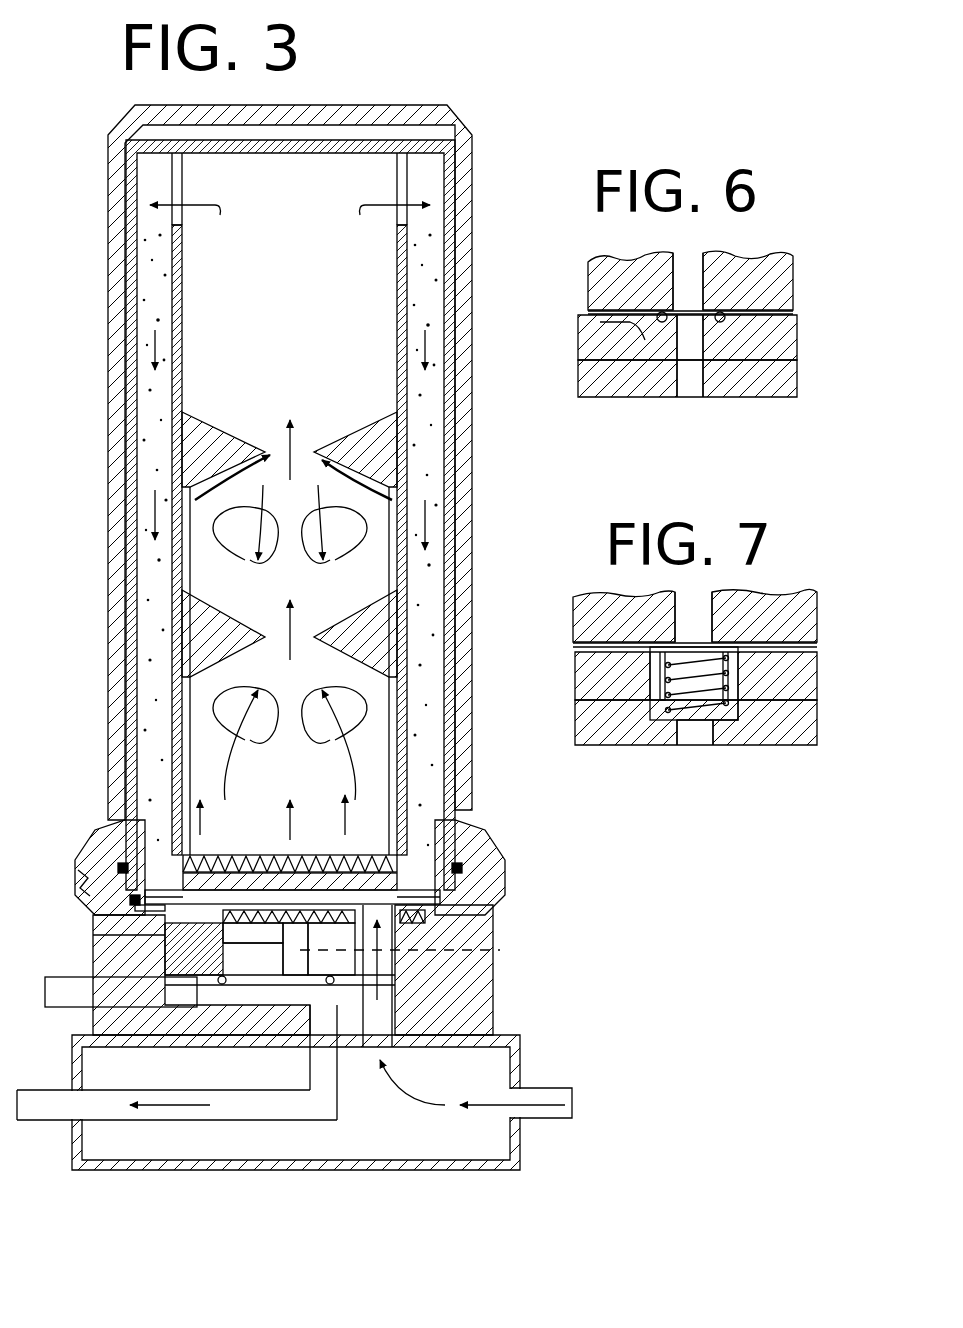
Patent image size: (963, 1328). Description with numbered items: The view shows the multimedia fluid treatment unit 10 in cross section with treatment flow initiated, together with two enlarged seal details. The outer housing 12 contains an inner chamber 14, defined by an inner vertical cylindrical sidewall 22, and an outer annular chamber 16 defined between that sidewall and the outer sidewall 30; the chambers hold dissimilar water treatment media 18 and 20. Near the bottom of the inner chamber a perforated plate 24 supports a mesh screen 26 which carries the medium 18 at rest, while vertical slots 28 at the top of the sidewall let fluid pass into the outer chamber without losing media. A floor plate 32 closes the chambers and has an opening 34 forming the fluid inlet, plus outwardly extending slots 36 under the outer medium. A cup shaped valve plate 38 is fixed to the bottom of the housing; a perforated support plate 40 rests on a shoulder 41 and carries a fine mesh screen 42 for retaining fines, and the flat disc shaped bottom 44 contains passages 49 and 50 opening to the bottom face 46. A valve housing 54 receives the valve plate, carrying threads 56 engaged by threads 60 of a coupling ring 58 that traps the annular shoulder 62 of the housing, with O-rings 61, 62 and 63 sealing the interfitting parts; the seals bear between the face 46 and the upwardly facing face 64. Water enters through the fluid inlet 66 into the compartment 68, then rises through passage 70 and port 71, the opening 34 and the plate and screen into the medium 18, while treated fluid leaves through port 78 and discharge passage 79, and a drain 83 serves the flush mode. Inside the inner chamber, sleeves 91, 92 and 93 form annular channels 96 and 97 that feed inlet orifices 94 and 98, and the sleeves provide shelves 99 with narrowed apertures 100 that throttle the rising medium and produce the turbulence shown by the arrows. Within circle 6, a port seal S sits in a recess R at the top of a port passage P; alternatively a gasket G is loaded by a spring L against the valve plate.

In FIG. 3, the circle 6 is at (410, 954).
In FIG. 3, the multimedia fluid treatment unit 10 is at (90, 505).
In FIG. 3, the outer housing 12 is at (472, 445).
In FIG. 3, the inner chamber 14 is at (172, 282).
In FIG. 3, the outer annular chamber 16 is at (140, 165).
In FIG. 3, the water treatment medium 18 is at (172, 780).
In FIG. 3, the water treatment medium 20 is at (140, 640).
In FIG. 3, the inner sidewall 22 is at (182, 248).
In FIG. 3, the perforated plate 24 is at (330, 910).
In FIG. 3, the mesh screen 26 is at (225, 873).
In FIG. 3, the vertical slots 28 is at (182, 218).
In FIG. 3, the outer sidewall 30 is at (108, 375).
In FIG. 3, the floor plate 32 is at (283, 855).
In FIG. 3, the opening 34 is at (365, 900).
In FIG. 3, the outwardly extending slots 36 is at (130, 820).
In FIG. 3, the valve plate 38 is at (470, 910).
In FIG. 6, the valve plate 38 is at (775, 285).
In FIG. 7, the valve plate 38 is at (800, 618).
In FIG. 3, the perforated support plate 40 is at (250, 945).
In FIG. 3, the shoulder 41 is at (93, 935).
In FIG. 3, the fine mesh screen 42 is at (290, 950).
In FIG. 3, the flat disc shaped bottom 44 is at (330, 945).
In FIG. 3, the bottom face 46 is at (218, 982).
In FIG. 6, the bottom face 46 is at (615, 313).
In FIG. 7, the bottom face 46 is at (592, 655).
In FIG. 3, the passage 49 is at (310, 990).
In FIG. 3, the passage 50 is at (165, 950).
In FIG. 3, the valve housing 54 is at (500, 1020).
In FIG. 6, the valve housing 54 is at (790, 358).
In FIG. 7, the valve housing 54 is at (795, 712).
In FIG. 3, the threads 56 is at (500, 888).
In FIG. 3, the coupling ring 58 is at (485, 842).
In FIG. 3, the threads 60 is at (500, 862).
In FIG. 3, the O-ring 61 is at (130, 898).
In FIG. 3, the annular shoulder 62 is at (118, 863).
In FIG. 3, the O-ring 63 is at (135, 908).
In FIG. 3, the upwardly facing face 64 is at (205, 978).
In FIG. 6, the upwardly facing face 64 is at (790, 336).
In FIG. 7, the upwardly facing face 64 is at (805, 678).
In FIG. 3, the fluid inlet 66 is at (550, 1118).
In FIG. 3, the compartment 68 is at (414, 1141).
In FIG. 3, the passage 70 is at (392, 1040).
In FIG. 3, the port 71 is at (339, 1062).
In FIG. 3, the port 78 is at (310, 1040).
In FIG. 3, the discharge passage 79 is at (232, 1108).
In FIG. 3, the drain 83 is at (68, 977).
In FIG. 3, the bottom sleeve 91 is at (190, 800).
In FIG. 3, the sleeve 92 is at (195, 588).
In FIG. 3, the uppermost sleeve 93 is at (195, 495).
In FIG. 3, the inlet orifices 94 is at (188, 710).
In FIG. 3, the annular channel 96 is at (160, 790).
In FIG. 3, the annular channel 97 is at (172, 580).
In FIG. 3, the inlet orifices 98 is at (410, 500).
In FIG. 3, the shelves 99 is at (335, 432).
In FIG. 3, the apertures 100 is at (265, 455).
In FIG. 6, the port seal S is at (725, 312).
In FIG. 6, the recess R is at (630, 345).
In FIG. 6, the port passage P is at (690, 392).
In FIG. 7, the port passage P is at (692, 735).
In FIG. 7, the gasket G is at (650, 680).
In FIG. 7, the spring L is at (655, 715).